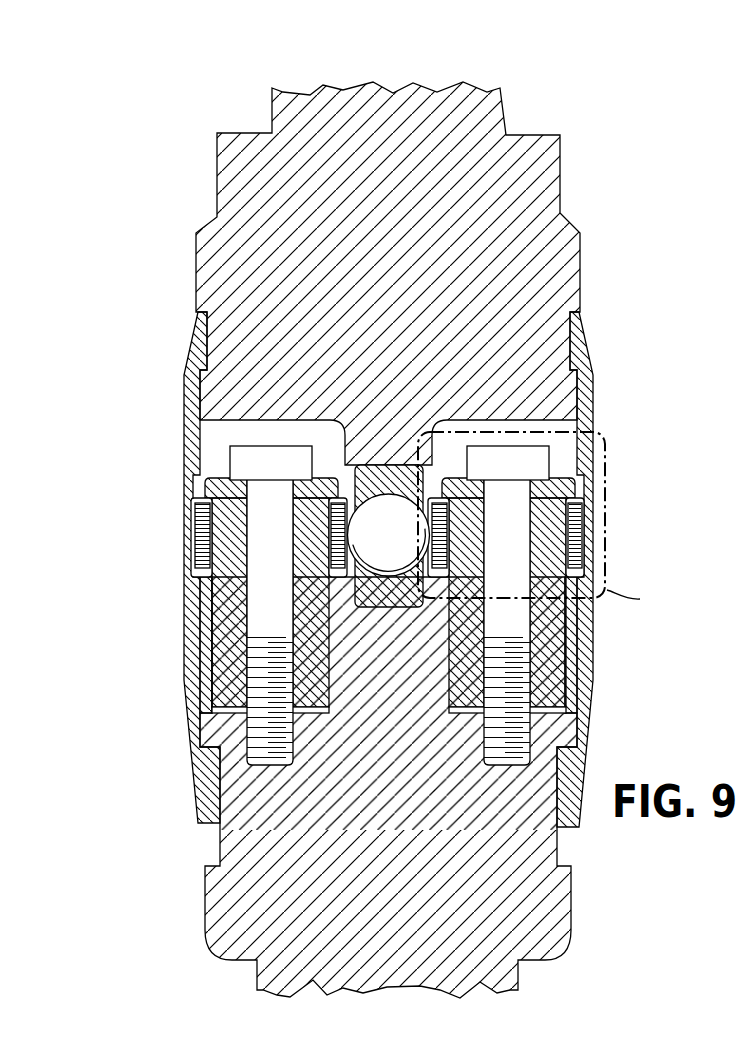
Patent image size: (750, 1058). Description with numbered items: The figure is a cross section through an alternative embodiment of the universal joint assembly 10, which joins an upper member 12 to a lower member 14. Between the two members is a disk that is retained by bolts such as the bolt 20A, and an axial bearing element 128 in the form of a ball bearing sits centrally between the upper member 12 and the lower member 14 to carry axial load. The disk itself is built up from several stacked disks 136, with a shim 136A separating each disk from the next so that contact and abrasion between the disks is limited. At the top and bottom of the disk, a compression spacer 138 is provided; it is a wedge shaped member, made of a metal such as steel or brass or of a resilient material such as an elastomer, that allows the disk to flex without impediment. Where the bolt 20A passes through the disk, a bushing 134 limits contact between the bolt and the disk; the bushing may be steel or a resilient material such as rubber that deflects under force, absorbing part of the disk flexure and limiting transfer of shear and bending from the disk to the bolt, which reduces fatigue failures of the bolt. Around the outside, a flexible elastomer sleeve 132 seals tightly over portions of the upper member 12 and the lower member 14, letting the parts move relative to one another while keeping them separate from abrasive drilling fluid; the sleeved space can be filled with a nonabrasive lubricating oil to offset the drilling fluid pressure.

The universal joint assembly 10 is at (450, 540).
The upper joint member 12 is at (560, 175).
The lower joint member 14 is at (571, 895).
The bolt 20A is at (506, 446).
The axial bearing element 128 is at (371, 548).
The sleeve 132 is at (593, 678).
The bushing 134 is at (566, 478).
The stacked disk 136 is at (580, 556).
The shim 136A is at (580, 533).
The compression spacer 138 is at (567, 498).